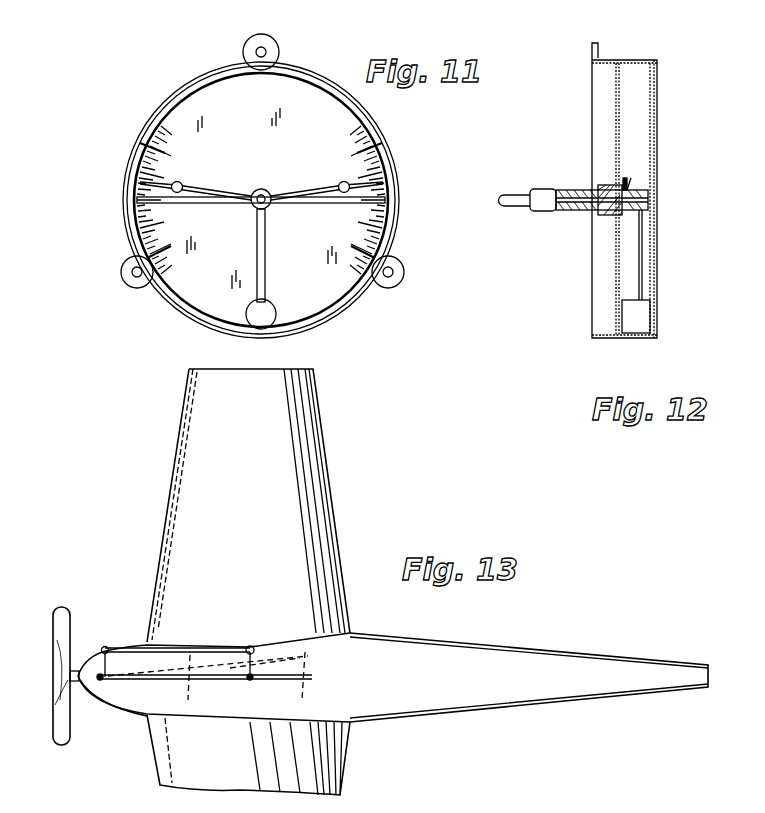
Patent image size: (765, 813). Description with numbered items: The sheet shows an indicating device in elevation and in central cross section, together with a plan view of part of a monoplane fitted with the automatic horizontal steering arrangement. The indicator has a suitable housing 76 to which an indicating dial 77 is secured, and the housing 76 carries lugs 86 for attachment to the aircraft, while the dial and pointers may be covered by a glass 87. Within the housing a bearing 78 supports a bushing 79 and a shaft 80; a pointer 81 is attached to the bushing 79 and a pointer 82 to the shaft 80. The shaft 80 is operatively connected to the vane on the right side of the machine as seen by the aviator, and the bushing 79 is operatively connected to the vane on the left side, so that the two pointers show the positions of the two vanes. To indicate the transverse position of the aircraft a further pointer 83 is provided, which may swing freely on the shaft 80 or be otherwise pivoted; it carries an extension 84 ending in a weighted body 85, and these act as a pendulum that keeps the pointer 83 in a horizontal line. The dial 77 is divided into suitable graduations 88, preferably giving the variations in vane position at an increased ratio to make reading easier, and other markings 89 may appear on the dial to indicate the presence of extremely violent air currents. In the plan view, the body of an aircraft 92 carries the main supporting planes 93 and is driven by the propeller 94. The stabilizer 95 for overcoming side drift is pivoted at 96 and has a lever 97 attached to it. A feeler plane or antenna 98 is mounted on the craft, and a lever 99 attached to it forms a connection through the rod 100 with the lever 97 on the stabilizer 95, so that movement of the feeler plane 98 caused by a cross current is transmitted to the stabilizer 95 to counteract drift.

In FIG. 11, the housing 76 is at (393, 174).
In FIG. 12, the housing 76 is at (641, 62).
In FIG. 11, the indicating dial 77 is at (320, 291).
In FIG. 12, the indicating dial 77 is at (615, 92).
In FIG. 12, the bearing 78 is at (610, 216).
In FIG. 12, the bushing 79 is at (545, 190).
In FIG. 12, the shaft 80 is at (512, 195).
In FIG. 11, the pointer 81 is at (205, 197).
In FIG. 12, the pointer 81 is at (642, 165).
In FIG. 11, the pointer 82 is at (349, 184).
In FIG. 12, the pointer 82 is at (630, 185).
In FIG. 11, the pointer 83 is at (205, 203).
In FIG. 12, the pointer 83 is at (650, 204).
In FIG. 11, the extension 84 is at (264, 278).
In FIG. 12, the extension 84 is at (643, 256).
In FIG. 11, the weighted body 85 is at (253, 315).
In FIG. 12, the weighted body 85 is at (645, 312).
In FIG. 11, the lugs 86 is at (279, 51).
In FIG. 12, the lugs 86 is at (599, 46).
In FIG. 12, the glass 87 is at (651, 118).
In FIG. 11, the graduations 88 is at (158, 128).
In FIG. 11, the markings 89 is at (345, 235).
In FIG. 13, the body of an aircraft 92 is at (398, 640).
In FIG. 13, the main supporting planes 93 is at (322, 433).
In FIG. 13, the propeller 94 is at (50, 667).
In FIG. 13, the stabilizer 95 is at (376, 636).
In FIG. 13, the pivot 96 is at (352, 632).
In FIG. 13, the lever 97 is at (332, 596).
In FIG. 13, the feeler plane 98 is at (214, 693).
In FIG. 13, the lever 99 is at (104, 644).
In FIG. 13, the rod 100 is at (158, 648).